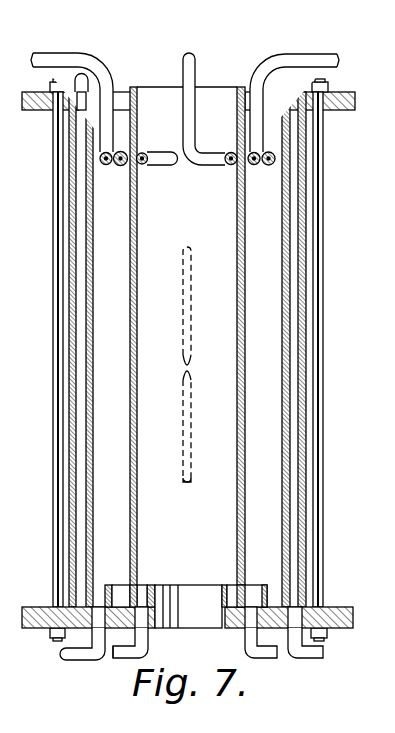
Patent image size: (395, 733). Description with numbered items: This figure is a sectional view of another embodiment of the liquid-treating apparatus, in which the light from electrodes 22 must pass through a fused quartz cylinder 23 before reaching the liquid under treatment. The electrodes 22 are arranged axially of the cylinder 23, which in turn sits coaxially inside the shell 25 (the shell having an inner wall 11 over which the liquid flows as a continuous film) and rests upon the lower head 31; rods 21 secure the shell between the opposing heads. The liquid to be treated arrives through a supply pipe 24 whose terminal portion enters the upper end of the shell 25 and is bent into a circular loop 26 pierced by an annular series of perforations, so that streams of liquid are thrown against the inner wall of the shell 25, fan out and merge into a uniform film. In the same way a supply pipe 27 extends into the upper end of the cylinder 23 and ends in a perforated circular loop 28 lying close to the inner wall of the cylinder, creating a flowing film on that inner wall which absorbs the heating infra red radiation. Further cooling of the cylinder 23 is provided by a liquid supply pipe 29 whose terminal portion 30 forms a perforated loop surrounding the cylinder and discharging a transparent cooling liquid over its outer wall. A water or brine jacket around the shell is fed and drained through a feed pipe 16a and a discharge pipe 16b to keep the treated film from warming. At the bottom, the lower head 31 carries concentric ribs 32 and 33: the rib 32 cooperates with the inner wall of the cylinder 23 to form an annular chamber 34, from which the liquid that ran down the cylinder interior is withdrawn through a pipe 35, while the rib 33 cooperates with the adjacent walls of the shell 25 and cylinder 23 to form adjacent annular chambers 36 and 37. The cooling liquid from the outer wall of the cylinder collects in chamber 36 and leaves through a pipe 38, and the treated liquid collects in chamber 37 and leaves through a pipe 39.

The inner wall of the shell 11 is at (93, 240).
The feed pipe 16a is at (80, 75).
The discharge pipe 16b is at (300, 652).
The rods 21 is at (55, 327).
The electrodes 22 is at (192, 355).
The fused quartz cylinder 23 is at (137, 280).
The supply pipe 24 is at (63, 40).
The shell 25 is at (93, 198).
The circular loop 26 is at (110, 163).
The supply pipe 27 is at (190, 66).
The circular loop 28 is at (212, 163).
The liquid supply pipe 29 is at (308, 62).
The terminal portion 30 is at (253, 133).
The lower head 31 is at (42, 607).
The concentric rib 32 is at (208, 585).
The concentric rib 33 is at (110, 585).
The annular chamber 34 is at (143, 592).
The pipe 35 is at (140, 645).
The annular chamber 36 is at (120, 658).
The annular chamber 37 is at (100, 592).
The pipe 38 is at (275, 658).
The pipe 39 is at (72, 661).